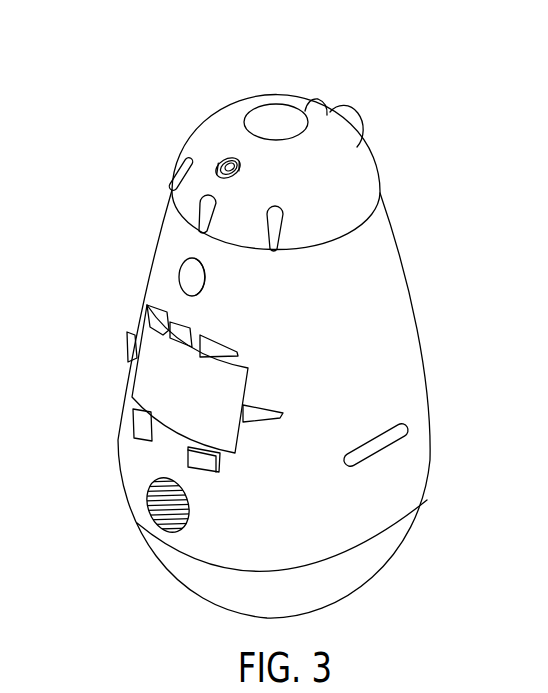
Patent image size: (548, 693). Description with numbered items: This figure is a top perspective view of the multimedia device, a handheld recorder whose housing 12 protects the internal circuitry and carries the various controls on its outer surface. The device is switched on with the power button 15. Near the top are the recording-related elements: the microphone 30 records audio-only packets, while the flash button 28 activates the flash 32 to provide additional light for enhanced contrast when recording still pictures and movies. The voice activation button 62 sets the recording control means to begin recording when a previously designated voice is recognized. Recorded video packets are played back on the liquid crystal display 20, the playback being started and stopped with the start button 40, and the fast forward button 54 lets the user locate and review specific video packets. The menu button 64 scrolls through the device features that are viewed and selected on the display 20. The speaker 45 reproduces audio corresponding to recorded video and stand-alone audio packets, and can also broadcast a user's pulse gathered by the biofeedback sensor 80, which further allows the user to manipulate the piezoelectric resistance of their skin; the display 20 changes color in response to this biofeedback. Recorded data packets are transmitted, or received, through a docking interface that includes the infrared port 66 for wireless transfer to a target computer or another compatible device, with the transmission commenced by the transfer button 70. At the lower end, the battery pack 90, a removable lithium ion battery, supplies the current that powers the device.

The housing 12 is at (427, 363).
The power button 15 is at (130, 427).
The liquid crystal display 20 is at (203, 399).
The flash button 28 is at (220, 207).
The microphone 30 is at (227, 157).
The flash 32 is at (313, 100).
The start button 40 is at (210, 463).
The speaker 45 is at (153, 517).
The fast forward button 54 is at (253, 413).
The voice activation button 62 is at (177, 172).
The menu button 64 is at (280, 223).
The infrared port 66 is at (272, 115).
The transfer button 70 is at (187, 275).
The biofeedback sensor 80 is at (405, 437).
The battery pack 90 is at (357, 580).